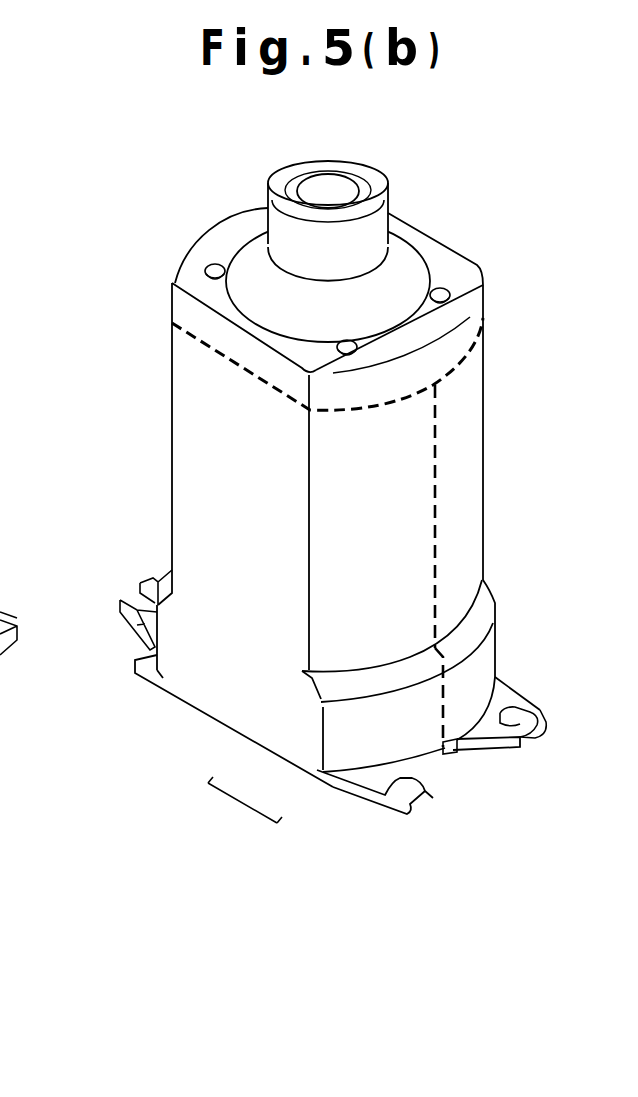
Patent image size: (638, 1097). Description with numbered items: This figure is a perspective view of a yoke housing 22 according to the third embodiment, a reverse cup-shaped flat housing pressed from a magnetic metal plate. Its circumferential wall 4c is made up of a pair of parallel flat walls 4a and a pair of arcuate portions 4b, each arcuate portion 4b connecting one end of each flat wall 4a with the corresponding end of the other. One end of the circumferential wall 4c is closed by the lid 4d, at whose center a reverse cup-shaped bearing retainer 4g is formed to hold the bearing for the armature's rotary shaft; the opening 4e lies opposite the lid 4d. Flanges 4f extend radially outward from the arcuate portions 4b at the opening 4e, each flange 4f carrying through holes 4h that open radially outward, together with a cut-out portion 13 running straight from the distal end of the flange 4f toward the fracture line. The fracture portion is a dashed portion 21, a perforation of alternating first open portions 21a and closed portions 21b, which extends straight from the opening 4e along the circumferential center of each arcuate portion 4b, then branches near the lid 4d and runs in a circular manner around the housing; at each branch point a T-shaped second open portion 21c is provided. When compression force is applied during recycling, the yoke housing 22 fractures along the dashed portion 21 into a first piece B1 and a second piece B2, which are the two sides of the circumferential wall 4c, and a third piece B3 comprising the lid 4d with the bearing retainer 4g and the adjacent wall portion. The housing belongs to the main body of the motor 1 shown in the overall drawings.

The motor 1 is at (10, 395).
The yoke housing 22 is at (115, 179).
The bearing retainer 4g is at (272, 181).
The third piece B3 is at (377, 175).
The lid 4d is at (447, 268).
The second piece B2 is at (201, 410).
The first piece B1 is at (484, 414).
The dashed portion 21 is at (556, 519).
The first open portions 21a is at (438, 533).
The closed portions 21b is at (440, 549).
The second open portions 21c is at (437, 386).
The cut-out portion 13 is at (452, 753).
The flat walls 4a is at (273, 737).
The arcuate portions 4b is at (320, 786).
The circumferential wall 4c is at (240, 801).
The opening 4e is at (217, 722).
The flanges 4f is at (132, 628).
The through holes 4h is at (118, 600).